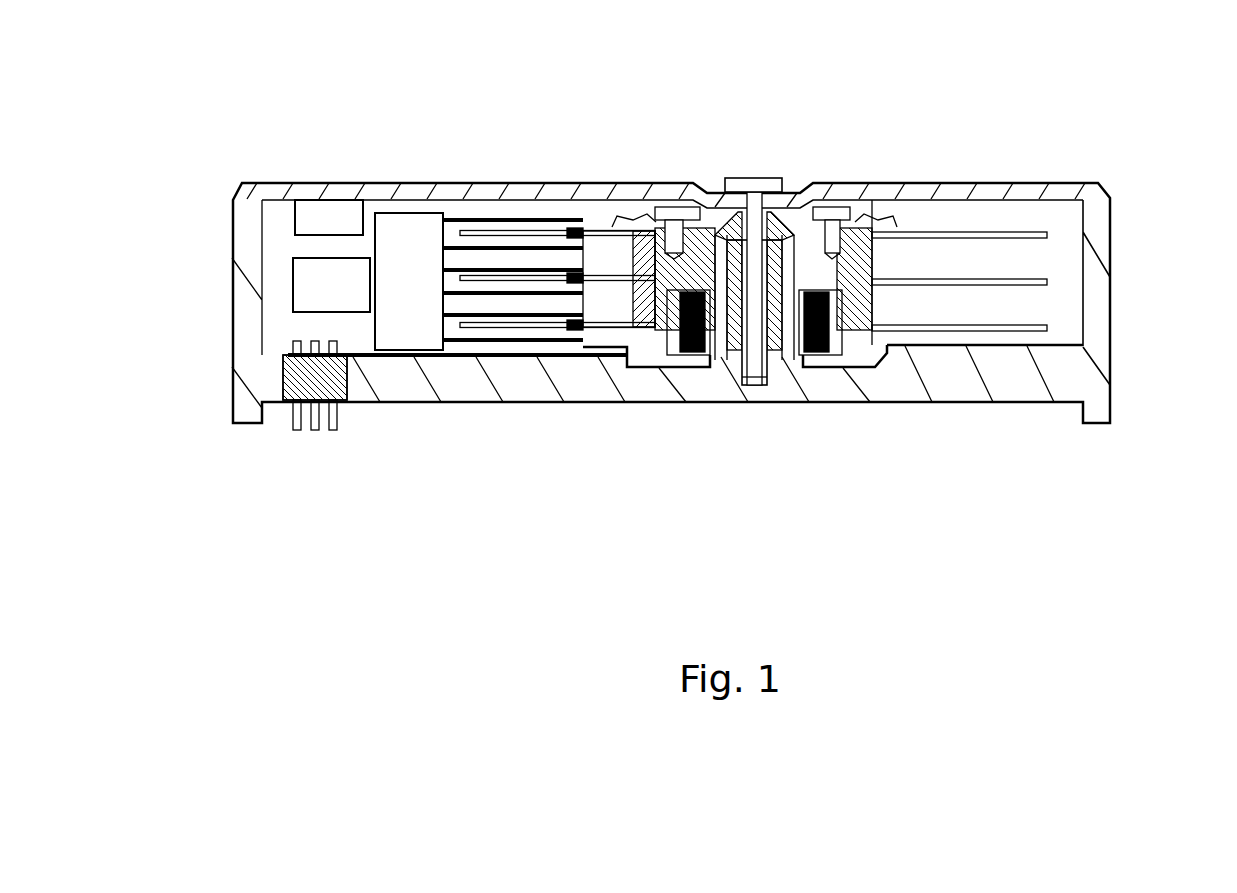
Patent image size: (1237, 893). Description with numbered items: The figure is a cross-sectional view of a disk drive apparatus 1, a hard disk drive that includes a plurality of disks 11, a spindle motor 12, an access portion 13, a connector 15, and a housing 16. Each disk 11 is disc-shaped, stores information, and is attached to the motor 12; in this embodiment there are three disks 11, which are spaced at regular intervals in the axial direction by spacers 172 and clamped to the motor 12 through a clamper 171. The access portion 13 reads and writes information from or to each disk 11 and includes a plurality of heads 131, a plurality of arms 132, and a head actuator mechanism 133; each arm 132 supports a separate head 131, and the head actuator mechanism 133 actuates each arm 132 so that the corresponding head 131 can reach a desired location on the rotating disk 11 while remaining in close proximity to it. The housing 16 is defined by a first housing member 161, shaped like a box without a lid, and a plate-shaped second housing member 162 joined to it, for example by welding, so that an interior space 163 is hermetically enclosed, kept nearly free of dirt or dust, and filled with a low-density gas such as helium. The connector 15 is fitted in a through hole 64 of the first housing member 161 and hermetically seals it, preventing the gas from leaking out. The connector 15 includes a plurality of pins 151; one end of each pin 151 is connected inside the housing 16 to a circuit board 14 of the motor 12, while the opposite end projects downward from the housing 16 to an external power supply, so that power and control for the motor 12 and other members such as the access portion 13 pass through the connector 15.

The disk drive apparatus 1 is at (210, 157).
The disk 11 is at (940, 233).
The spindle motor 12 is at (826, 424).
The access portion 13 is at (485, 318).
The head 131 is at (575, 215).
The arm 132 is at (465, 218).
The head actuator mechanism 133 is at (415, 250).
The circuit board 14 is at (415, 360).
The connector 15 is at (347, 387).
The pin 151 is at (295, 433).
The housing 16 is at (1184, 158).
The first housing member 161 is at (1098, 273).
The second housing member 162 is at (1055, 188).
The interior space 163 is at (1088, 332).
The clamper 171 is at (660, 210).
The spacer 172 is at (858, 212).
The through hole 64 is at (271, 388).